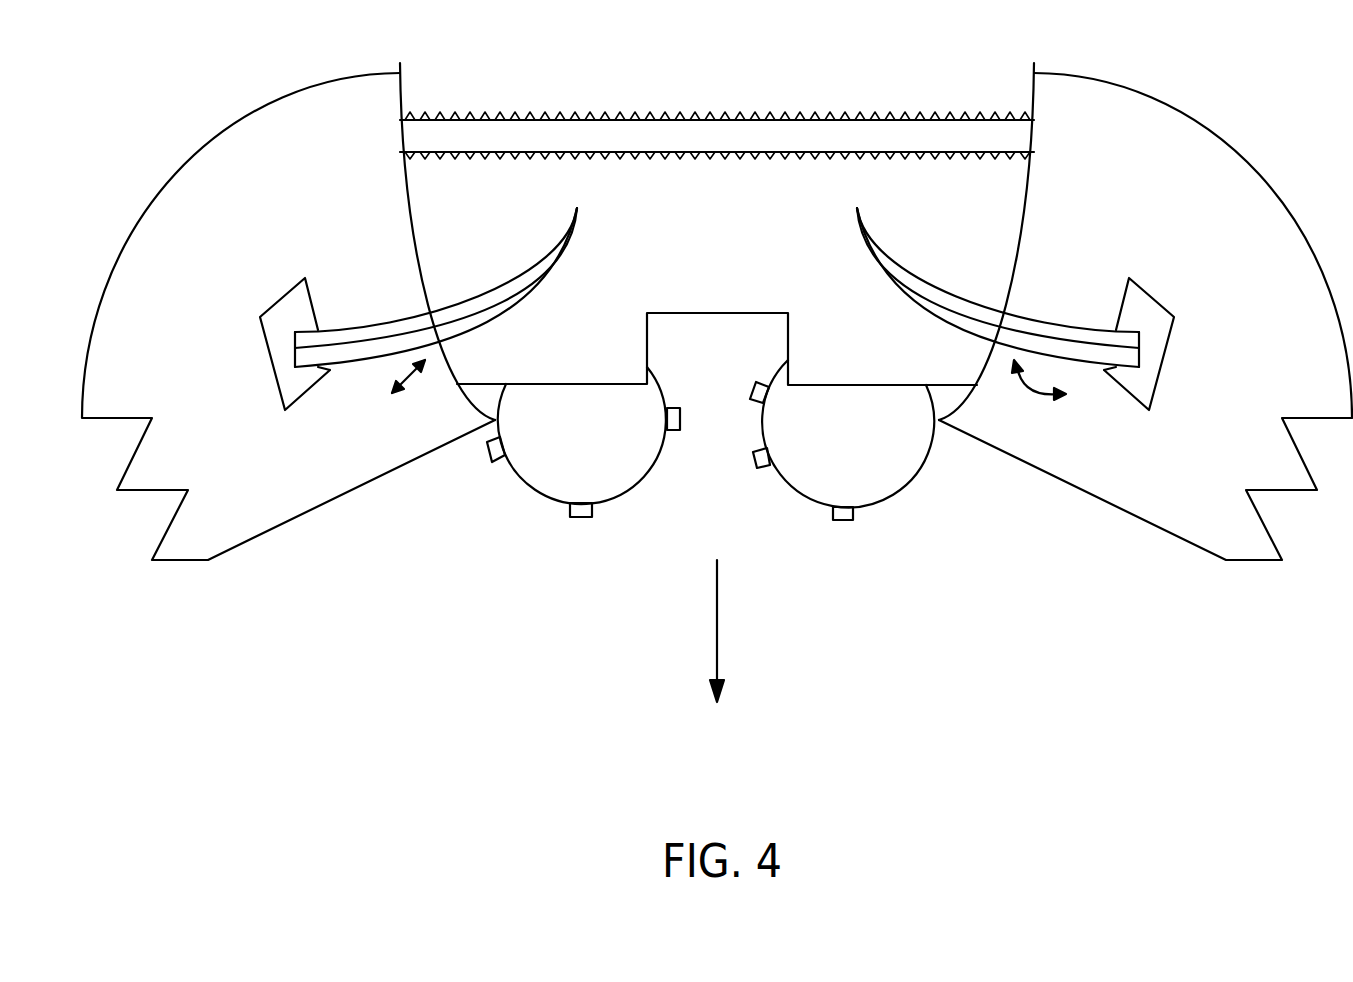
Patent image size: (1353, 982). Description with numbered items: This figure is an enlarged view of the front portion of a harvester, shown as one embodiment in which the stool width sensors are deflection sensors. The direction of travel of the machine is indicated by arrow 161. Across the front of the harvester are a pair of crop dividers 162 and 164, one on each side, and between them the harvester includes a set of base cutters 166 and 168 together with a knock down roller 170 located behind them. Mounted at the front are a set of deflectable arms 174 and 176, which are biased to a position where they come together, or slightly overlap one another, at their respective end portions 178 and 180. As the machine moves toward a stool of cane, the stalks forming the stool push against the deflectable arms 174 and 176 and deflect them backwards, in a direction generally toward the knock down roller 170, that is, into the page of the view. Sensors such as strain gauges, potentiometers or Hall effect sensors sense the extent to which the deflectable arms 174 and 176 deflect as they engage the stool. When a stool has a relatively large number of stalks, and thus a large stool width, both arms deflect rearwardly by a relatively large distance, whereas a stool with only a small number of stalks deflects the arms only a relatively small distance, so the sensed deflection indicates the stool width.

The arrow 161 is at (715, 597).
The crop divider 162 is at (280, 140).
The crop divider 164 is at (1159, 155).
The base cutter 166 is at (542, 453).
The base cutter 168 is at (815, 472).
The knock down roller 170 is at (752, 137).
The deflectable arm 174 is at (382, 348).
The deflectable arm 176 is at (1099, 356).
The end portion 178 is at (548, 258).
The end portion 180 is at (892, 263).